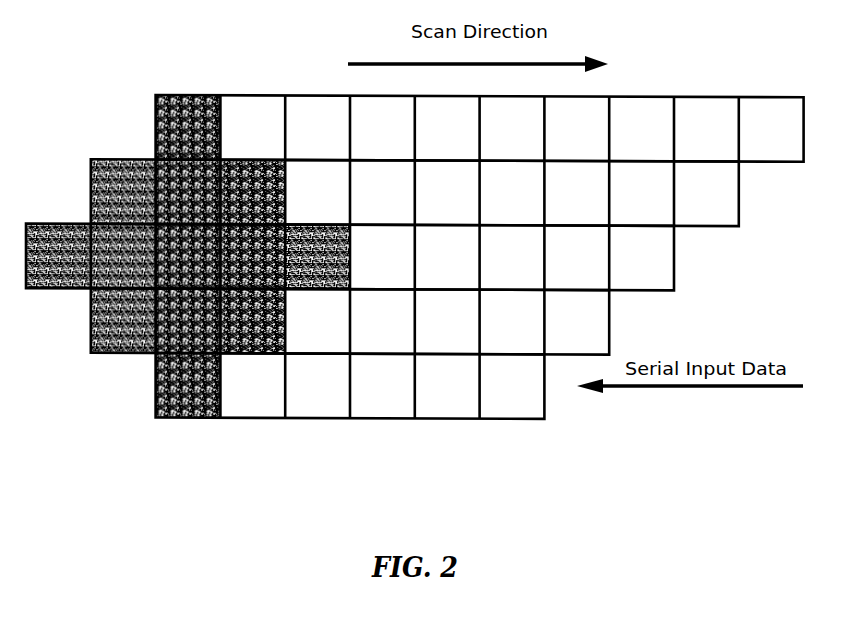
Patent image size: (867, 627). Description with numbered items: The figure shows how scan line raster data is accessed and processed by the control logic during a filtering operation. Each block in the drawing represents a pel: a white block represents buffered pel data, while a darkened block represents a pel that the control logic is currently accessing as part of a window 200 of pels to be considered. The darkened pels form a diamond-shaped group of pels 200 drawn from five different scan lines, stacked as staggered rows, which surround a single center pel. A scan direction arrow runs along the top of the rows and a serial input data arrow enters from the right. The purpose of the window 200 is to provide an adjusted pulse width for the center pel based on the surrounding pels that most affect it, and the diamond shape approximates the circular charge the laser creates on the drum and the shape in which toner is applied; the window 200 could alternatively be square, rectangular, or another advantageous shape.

The window of pels 200 is at (117, 121).